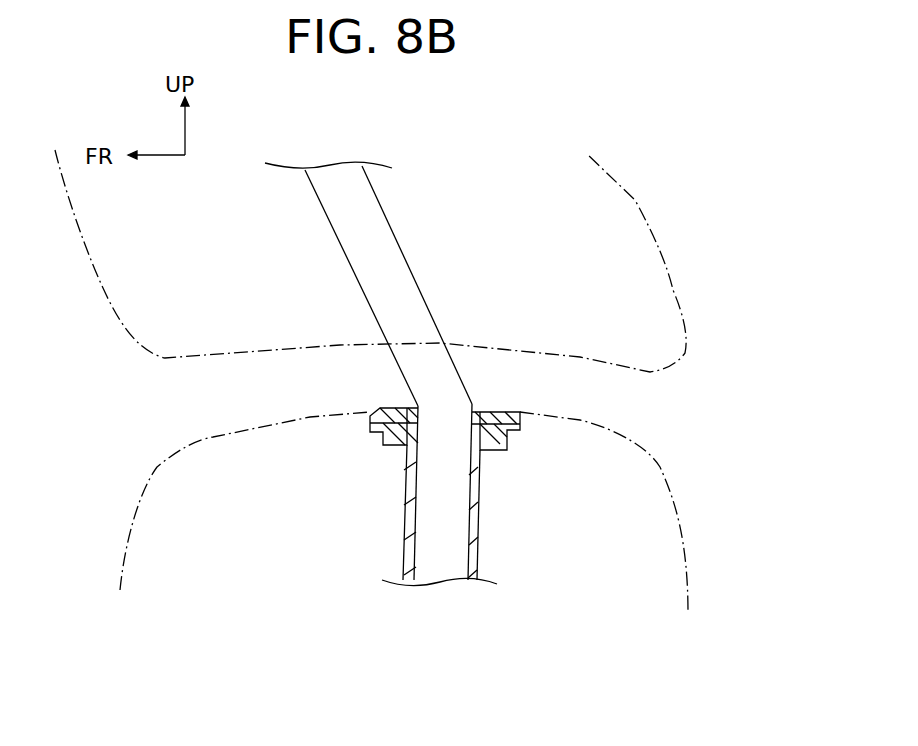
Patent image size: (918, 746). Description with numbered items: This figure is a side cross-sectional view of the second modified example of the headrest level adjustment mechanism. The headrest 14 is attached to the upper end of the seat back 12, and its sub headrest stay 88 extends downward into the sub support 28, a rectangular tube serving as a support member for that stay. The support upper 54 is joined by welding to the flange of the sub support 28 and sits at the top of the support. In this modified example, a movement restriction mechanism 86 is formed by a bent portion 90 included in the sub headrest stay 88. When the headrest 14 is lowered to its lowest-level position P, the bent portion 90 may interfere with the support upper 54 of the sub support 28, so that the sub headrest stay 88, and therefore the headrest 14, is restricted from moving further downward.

The lowest-level position P is at (684, 204).
The seat back 12 is at (640, 447).
The headrest 14 is at (660, 263).
The sub support 28 is at (490, 500).
The support upper 54 is at (386, 406).
The movement restriction mechanism 86 is at (478, 366).
The sub headrest stay 88 is at (395, 248).
The bent portion 90 is at (474, 404).